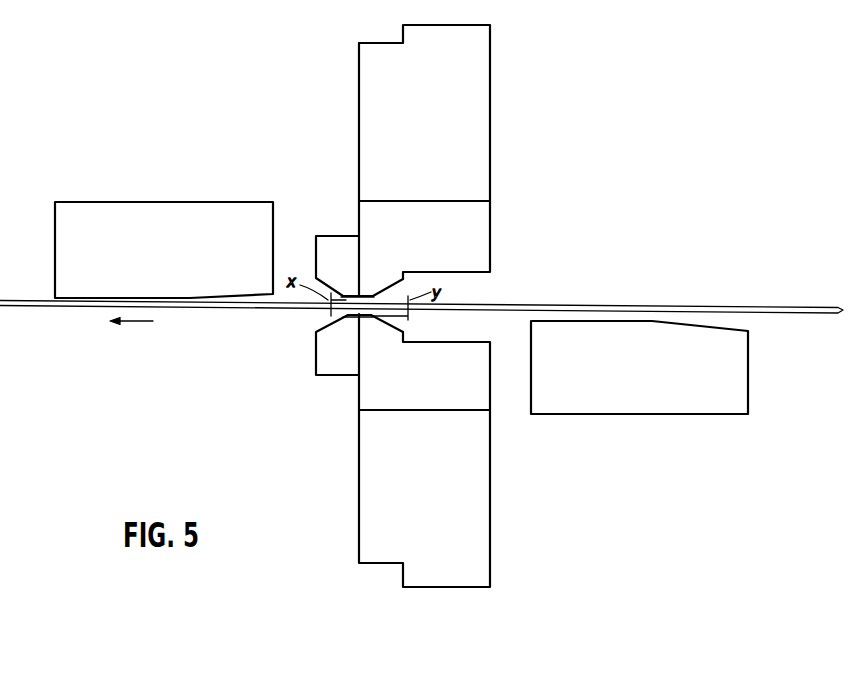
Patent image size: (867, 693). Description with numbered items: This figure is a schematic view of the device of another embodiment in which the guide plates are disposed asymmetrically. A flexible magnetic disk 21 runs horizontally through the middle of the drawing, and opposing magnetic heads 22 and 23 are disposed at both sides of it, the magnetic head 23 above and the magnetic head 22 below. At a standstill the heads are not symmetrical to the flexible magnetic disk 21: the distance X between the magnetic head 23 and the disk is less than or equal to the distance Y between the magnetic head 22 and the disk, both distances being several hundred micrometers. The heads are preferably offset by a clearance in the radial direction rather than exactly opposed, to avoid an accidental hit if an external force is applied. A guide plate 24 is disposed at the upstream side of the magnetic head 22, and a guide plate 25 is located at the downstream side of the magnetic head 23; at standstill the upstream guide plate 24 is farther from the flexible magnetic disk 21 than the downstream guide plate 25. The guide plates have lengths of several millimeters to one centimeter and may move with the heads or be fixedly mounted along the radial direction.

The flexible magnetic disk 21 is at (523, 305).
The magnetic head 22 is at (352, 326).
The magnetic head 23 is at (347, 283).
The guide plate 24 is at (660, 397).
The guide plate 25 is at (182, 221).